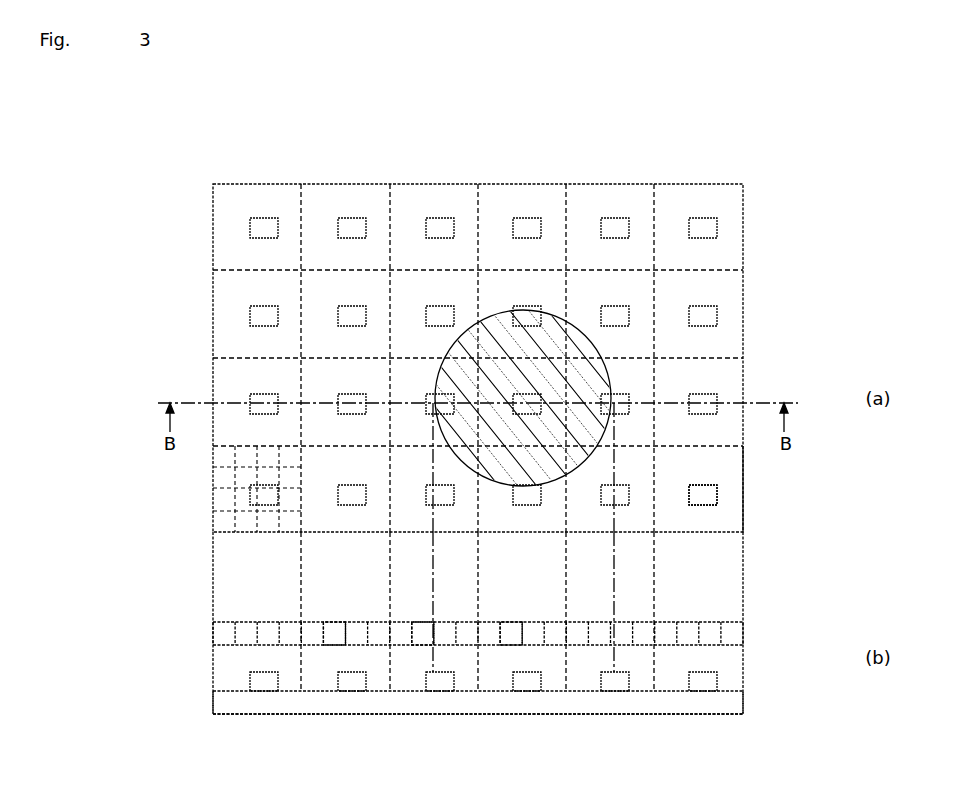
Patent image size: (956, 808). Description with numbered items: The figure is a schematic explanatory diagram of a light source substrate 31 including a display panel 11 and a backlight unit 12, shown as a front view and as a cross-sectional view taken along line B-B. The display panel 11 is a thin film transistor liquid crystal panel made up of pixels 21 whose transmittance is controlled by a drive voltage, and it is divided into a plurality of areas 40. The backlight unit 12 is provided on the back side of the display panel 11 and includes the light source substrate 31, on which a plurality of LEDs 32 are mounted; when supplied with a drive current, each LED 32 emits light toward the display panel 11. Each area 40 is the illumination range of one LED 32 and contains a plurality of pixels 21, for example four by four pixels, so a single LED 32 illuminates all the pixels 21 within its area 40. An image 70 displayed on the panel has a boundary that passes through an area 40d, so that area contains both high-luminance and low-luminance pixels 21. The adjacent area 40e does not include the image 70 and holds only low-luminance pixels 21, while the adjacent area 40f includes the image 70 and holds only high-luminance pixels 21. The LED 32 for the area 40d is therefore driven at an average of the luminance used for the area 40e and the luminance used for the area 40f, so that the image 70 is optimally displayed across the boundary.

In FIG. 3A, the display panel 11 is at (745, 200).
In FIG. 3B, the display panel 11 is at (212, 633).
In FIG. 3B, the backlight unit 12 is at (212, 705).
In FIG. 3A, the pixel 21 is at (222, 457).
In FIG. 3B, the pixel 21 is at (743, 622).
In FIG. 3A, the light source substrate 31 is at (745, 465).
In FIG. 3B, the light source substrate 31 is at (731, 722).
In FIG. 3A, the LED 32 is at (717, 490).
In FIG. 3B, the LED 32 is at (717, 681).
In FIG. 3A, the area 40 is at (610, 187).
In FIG. 3A, the area including boundary of image 40d is at (408, 368).
In FIG. 3B, the area including boundary of image 40d is at (416, 621).
In FIG. 3A, the area not including image 40e is at (315, 385).
In FIG. 3B, the area not including image 40e is at (336, 621).
In FIG. 3A, the area including image 40f is at (509, 378).
In FIG. 3B, the area including image 40f is at (517, 621).
In FIG. 3A, the image 70 is at (603, 345).